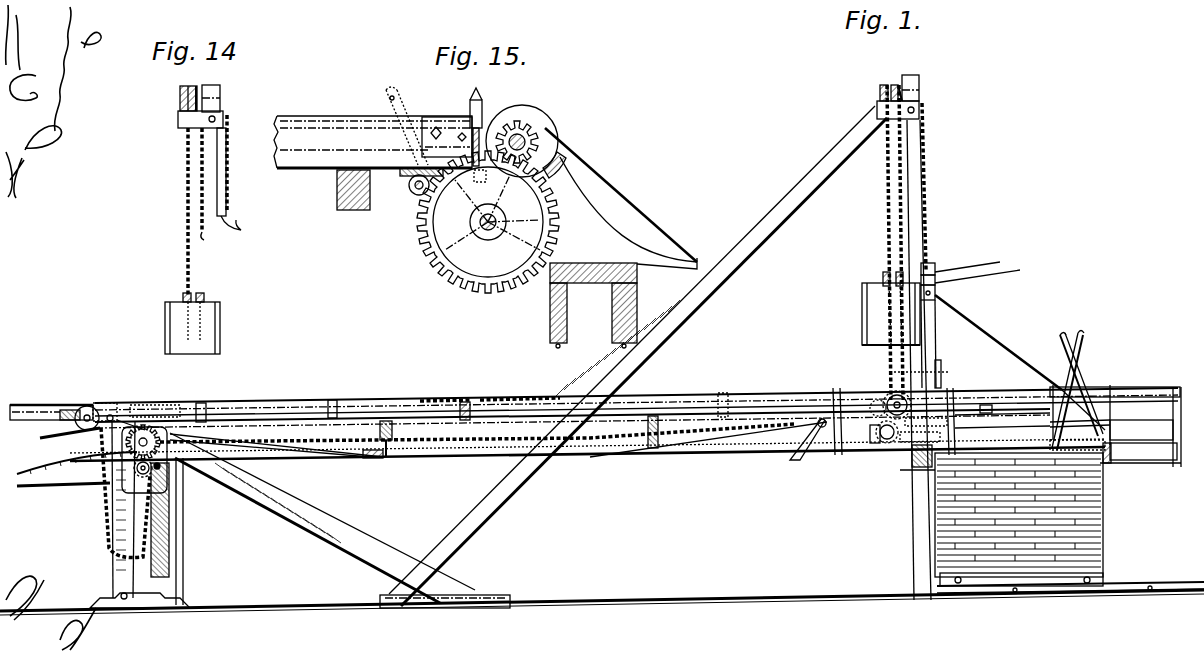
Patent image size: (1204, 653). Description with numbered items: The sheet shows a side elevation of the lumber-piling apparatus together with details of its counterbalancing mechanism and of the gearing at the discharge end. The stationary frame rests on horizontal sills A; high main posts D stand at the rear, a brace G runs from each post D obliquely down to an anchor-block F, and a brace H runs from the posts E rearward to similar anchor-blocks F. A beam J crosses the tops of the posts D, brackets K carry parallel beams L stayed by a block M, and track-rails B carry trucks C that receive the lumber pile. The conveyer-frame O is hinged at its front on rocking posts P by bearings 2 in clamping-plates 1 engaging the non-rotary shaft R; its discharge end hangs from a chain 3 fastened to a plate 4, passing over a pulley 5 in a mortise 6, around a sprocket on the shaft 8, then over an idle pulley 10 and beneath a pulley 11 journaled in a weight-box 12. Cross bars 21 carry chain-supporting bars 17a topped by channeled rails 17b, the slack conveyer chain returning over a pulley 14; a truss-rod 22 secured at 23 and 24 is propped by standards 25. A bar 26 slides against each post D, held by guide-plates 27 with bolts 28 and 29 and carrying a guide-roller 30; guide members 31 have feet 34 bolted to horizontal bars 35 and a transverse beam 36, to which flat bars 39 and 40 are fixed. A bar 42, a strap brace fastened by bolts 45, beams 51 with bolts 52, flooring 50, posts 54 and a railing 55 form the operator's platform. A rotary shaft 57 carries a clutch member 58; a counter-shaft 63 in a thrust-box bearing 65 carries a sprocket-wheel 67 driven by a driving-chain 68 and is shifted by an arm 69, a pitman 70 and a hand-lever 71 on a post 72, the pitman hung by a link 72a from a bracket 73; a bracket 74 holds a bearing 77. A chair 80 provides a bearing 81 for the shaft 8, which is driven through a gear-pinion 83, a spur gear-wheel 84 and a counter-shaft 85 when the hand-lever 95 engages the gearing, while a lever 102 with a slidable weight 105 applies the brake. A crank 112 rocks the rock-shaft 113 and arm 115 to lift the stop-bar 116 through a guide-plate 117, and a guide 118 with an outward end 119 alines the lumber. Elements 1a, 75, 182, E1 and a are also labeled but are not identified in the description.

In FIG. 14, the clamping-plates 1 is at (208, 86).
In FIG. 1, the clamping-plates 1 is at (140, 410).
In FIG. 1, the frame bar extension 1a is at (140, 410).
In FIG. 14, the bearings 2 is at (197, 86).
In FIG. 1, the bearings 2 is at (108, 402).
In FIG. 14, the chain 3 is at (230, 150).
In FIG. 1, the chain 3 is at (896, 242).
In FIG. 1, the plate 4 is at (967, 264).
In FIG. 14, the upright pulley 5 is at (222, 112).
In FIG. 1, the upright pulley 5 is at (922, 110).
In FIG. 14, the mortise 6 is at (222, 100).
In FIG. 1, the mortise 6 is at (922, 96).
In FIG. 15, the rotary shaft 8 is at (548, 139).
In FIG. 1, the rotary shaft 8 is at (885, 400).
In FIG. 14, the idle pulley 10 is at (180, 97).
In FIG. 1, the idle pulley 10 is at (892, 85).
In FIG. 14, the pulley 11 is at (184, 297).
In FIG. 1, the pulley 11 is at (882, 272).
In FIG. 14, the weight-box 12 is at (221, 332).
In FIG. 1, the weight-box 12 is at (861, 312).
In FIG. 1, the pulley 14 is at (92, 402).
In FIG. 15, the chain-supporting bars 17a is at (373, 142).
In FIG. 15, the channeled rail 17b is at (385, 92).
In FIG. 1, the channeled rail 17b is at (555, 398).
In FIG. 15, the cross bars 21 is at (360, 210).
In FIG. 1, the cross bars 21 is at (390, 420).
In FIG. 1, the truss-rod 22 is at (380, 460).
In FIG. 1, the truss-rod securing point 23 is at (203, 403).
In FIG. 1, the truss-rod securing point 24 is at (845, 440).
In FIG. 1, the standards 25 is at (405, 462).
In FIG. 1, the bar 26 is at (937, 358).
In FIG. 1, the guide-plates 27 is at (986, 271).
In FIG. 1, the bolts 28 is at (936, 290).
In FIG. 1, the bolts 29 is at (930, 278).
In FIG. 1, the guide-roller 30 is at (930, 270).
In FIG. 1, the guide members 31 is at (965, 395).
In FIG. 1, the foot 34 is at (912, 455).
In FIG. 1, the horizontal bar 35 is at (1000, 413).
In FIG. 15, the beam 36 is at (637, 302).
In FIG. 1, the beam 36 is at (920, 472).
In FIG. 15, the flat bar 39 is at (588, 284).
In FIG. 15, the flat bar 40 is at (552, 303).
In FIG. 1, the bar 42 is at (1140, 455).
In FIG. 1, the bolts 45 is at (1140, 452).
In FIG. 1, the flooring 50 is at (1168, 505).
In FIG. 1, the beam 51 is at (1133, 511).
In FIG. 1, the bolts 52 is at (1170, 480).
In FIG. 1, the posts 54 is at (834, 395).
In FIG. 1, the railing 55 is at (1158, 387).
In FIG. 1, the rotary shaft 57 is at (160, 440).
In FIG. 1, the clutch member 58 is at (120, 470).
In FIG. 1, the counter-shaft 63 is at (150, 474).
In FIG. 1, the bearing 65 is at (162, 468).
In FIG. 1, the sprocket-wheel 67 is at (135, 475).
In FIG. 1, the driving-chain 68 is at (100, 470).
In FIG. 1, the arm 69 is at (125, 470).
In FIG. 1, the pitman 70 is at (300, 450).
In FIG. 1, the hand-lever 71 is at (1078, 365).
In FIG. 1, the post 72 is at (1068, 420).
In FIG. 1, the link 72a is at (815, 432).
In FIG. 1, the bracket 73 is at (820, 438).
In FIG. 1, the bracket 74 is at (1020, 362).
In FIG. 1, the conveyor chain 75 is at (505, 445).
In FIG. 1, the bearing 77 is at (455, 402).
In FIG. 15, the chair 80 is at (621, 198).
In FIG. 15, the bearing 81 is at (558, 143).
In FIG. 15, the gear-pinion 83 is at (566, 160).
In FIG. 15, the spur gear-wheel 84 is at (452, 268).
In FIG. 15, the counter-shaft 85 is at (486, 242).
In FIG. 1, the hand-lever 95 is at (1077, 382).
In FIG. 1, the lever 102 is at (1000, 405).
In FIG. 1, the slidable weight 105 is at (1005, 415).
In FIG. 15, the crank 112 is at (443, 117).
In FIG. 15, the rock-shaft 113 is at (414, 193).
In FIG. 15, the arm 115 is at (472, 220).
In FIG. 15, the stop-bar 116 is at (482, 108).
In FIG. 15, the guide-plate 117 is at (535, 128).
In FIG. 1, the guide 118 is at (380, 385).
In FIG. 1, the guide extension 119 is at (165, 405).
In FIG. 1, the pin 182 is at (74, 371).
In FIG. 1, the sills A is at (712, 600).
In FIG. 1, the track-rails B is at (1158, 586).
In FIG. 1, the trucks C is at (1105, 580).
In FIG. 14, the main upright posts D is at (228, 220).
In FIG. 1, the main upright posts D is at (922, 165).
In FIG. 1, the supporting-posts E is at (184, 586).
In FIG. 1, the upright E1 is at (176, 566).
In FIG. 1, the anchor-block F is at (385, 596).
In FIG. 1, the brace G is at (473, 549).
In FIG. 1, the brace H is at (360, 530).
In FIG. 1, the horizontal beam J is at (922, 85).
In FIG. 1, the horizontal bracket K is at (877, 105).
In FIG. 1, the parallel beams L is at (880, 90).
In FIG. 1, the block M is at (900, 95).
In FIG. 1, the conveyer-frame O is at (636, 395).
In FIG. 1, the rocking posts P is at (112, 565).
In FIG. 1, the horizontal non-rotary shaft R is at (84, 431).
In FIG. 1, the base bracket a is at (102, 600).